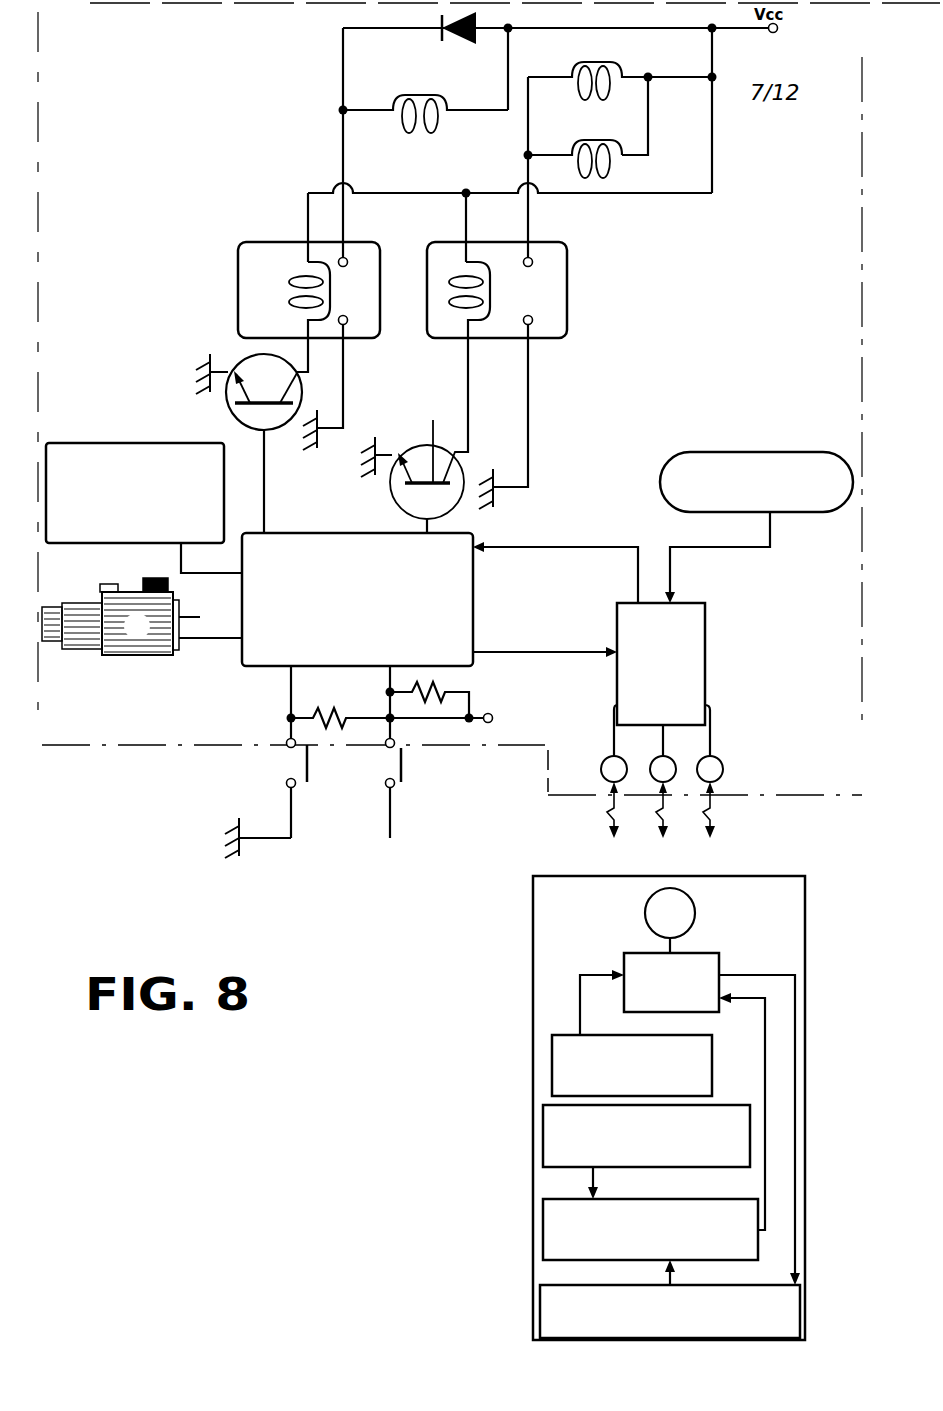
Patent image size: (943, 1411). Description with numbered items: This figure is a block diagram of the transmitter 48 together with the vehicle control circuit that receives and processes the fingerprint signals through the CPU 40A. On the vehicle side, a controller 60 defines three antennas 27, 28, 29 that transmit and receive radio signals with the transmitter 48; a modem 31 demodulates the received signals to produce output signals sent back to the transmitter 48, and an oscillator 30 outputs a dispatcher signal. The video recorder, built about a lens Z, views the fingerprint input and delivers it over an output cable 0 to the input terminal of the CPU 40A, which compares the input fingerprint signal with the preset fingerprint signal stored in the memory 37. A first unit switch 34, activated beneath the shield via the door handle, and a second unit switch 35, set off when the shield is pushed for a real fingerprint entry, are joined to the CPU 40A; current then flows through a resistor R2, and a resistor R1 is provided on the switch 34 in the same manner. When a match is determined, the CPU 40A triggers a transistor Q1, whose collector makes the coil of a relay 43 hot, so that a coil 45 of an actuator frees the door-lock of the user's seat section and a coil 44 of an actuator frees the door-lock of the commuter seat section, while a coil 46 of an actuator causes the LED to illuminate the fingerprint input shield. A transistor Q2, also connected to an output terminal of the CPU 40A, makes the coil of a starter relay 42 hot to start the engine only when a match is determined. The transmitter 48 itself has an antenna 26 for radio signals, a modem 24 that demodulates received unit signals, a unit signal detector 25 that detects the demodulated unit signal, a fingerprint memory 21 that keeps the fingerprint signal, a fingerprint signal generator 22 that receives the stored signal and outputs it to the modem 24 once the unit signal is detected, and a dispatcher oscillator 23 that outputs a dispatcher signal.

The element LED is at (456, 38).
The coil of an actuator 46 is at (430, 134).
The coil of an actuator 45 is at (600, 103).
The coil of an actuator 44 is at (606, 177).
The starter relay 42 is at (380, 290).
The relay 43 is at (567, 300).
The transistor Q2 is at (258, 395).
The transistor Q1 is at (433, 420).
The CPU 40A is at (358, 533).
The memory 37 is at (181, 443).
The lens Z is at (43, 620).
The output cable 0 is at (200, 640).
The resistor R1 is at (338, 722).
The resistor R2 is at (436, 683).
The first unit switch 34 is at (308, 765).
The second unit switch 35 is at (402, 765).
The controller 60 is at (168, 748).
The oscillator 30 is at (673, 456).
The modem 31 is at (705, 634).
The antenna 27 is at (612, 786).
The antenna 28 is at (660, 797).
The antenna 29 is at (706, 789).
The transmitter 48 is at (533, 1150).
The antenna 26 is at (645, 914).
The modem 24 is at (710, 953).
The dispatcher oscillator 23 is at (712, 1050).
The fingerprint memory 21 is at (648, 1167).
The fingerprint signal generator 22 is at (641, 1262).
The unit signal detector 25 is at (690, 1285).